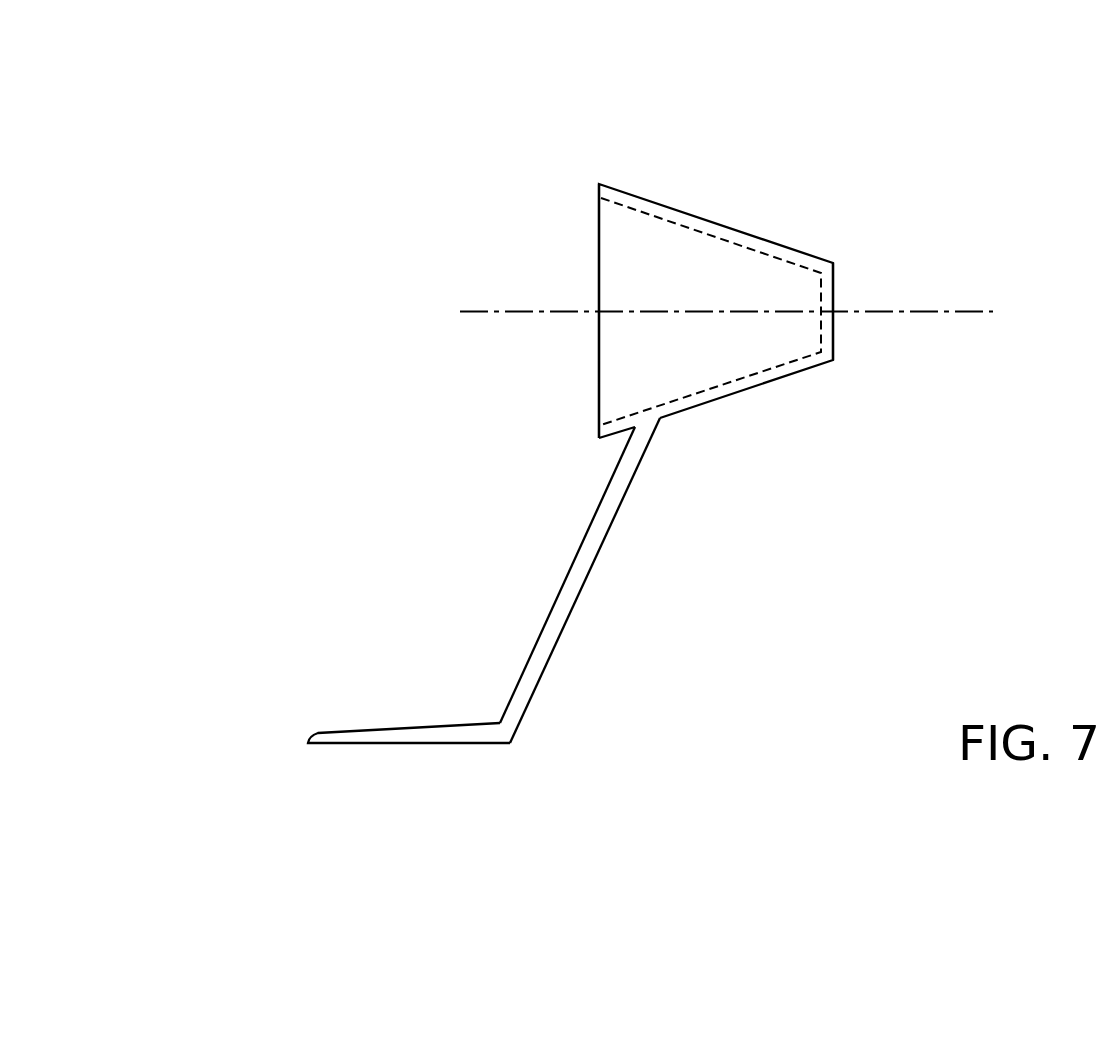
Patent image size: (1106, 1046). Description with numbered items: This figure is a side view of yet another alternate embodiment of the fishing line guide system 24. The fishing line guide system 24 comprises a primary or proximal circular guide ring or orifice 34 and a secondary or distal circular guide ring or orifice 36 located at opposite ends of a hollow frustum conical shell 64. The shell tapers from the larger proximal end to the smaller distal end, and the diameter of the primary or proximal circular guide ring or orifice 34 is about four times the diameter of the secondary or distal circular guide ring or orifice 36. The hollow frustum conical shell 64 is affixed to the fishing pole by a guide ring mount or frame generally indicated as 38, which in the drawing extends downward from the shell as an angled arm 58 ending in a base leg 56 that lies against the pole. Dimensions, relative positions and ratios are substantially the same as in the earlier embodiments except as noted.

The fishing line guide system 24 is at (410, 172).
The primary or proximal circular guide ring or orifice 34 is at (594, 264).
The secondary or distal circular guide ring or orifice 36 is at (839, 291).
The hollow frustum conical shell 64 is at (735, 230).
The guide ring mount or frame 38 is at (612, 596).
The bracket arm 58 is at (613, 475).
The bracket foot 56 is at (538, 638).